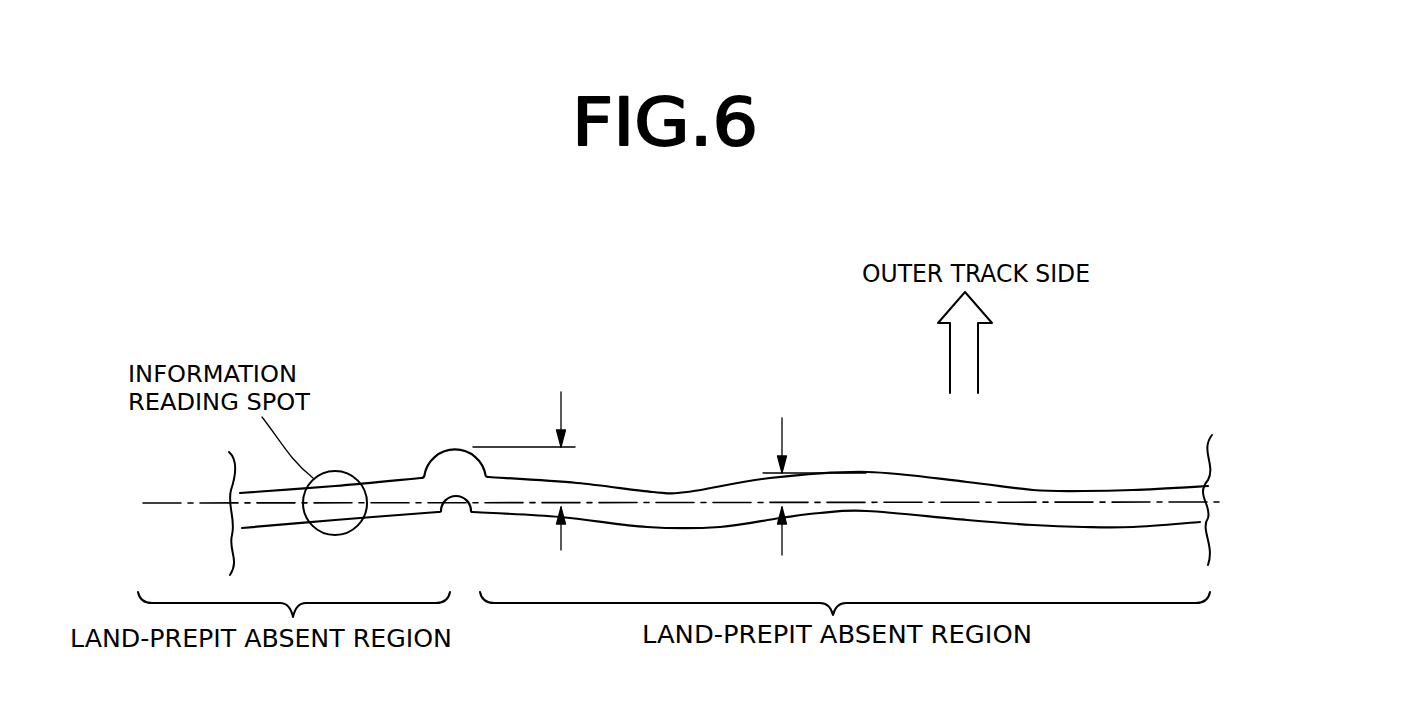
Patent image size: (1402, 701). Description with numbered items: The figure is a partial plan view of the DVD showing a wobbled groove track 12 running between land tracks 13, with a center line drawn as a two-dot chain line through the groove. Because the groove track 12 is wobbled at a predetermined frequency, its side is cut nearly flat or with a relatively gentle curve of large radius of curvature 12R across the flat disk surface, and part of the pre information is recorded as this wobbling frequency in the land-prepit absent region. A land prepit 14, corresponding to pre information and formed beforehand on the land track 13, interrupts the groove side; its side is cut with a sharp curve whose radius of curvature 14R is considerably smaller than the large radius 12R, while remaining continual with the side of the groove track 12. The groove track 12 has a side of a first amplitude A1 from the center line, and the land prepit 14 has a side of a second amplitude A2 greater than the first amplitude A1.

The groove track 12 is at (273, 512).
The radius of curvature of the groove track 12R is at (685, 490).
The land track 13 is at (1198, 455).
The land prepit 14 is at (457, 447).
The radius of curvature of the land prepit 14R is at (460, 483).
The first amplitude A1 is at (814, 472).
The second amplitude A2 is at (527, 456).